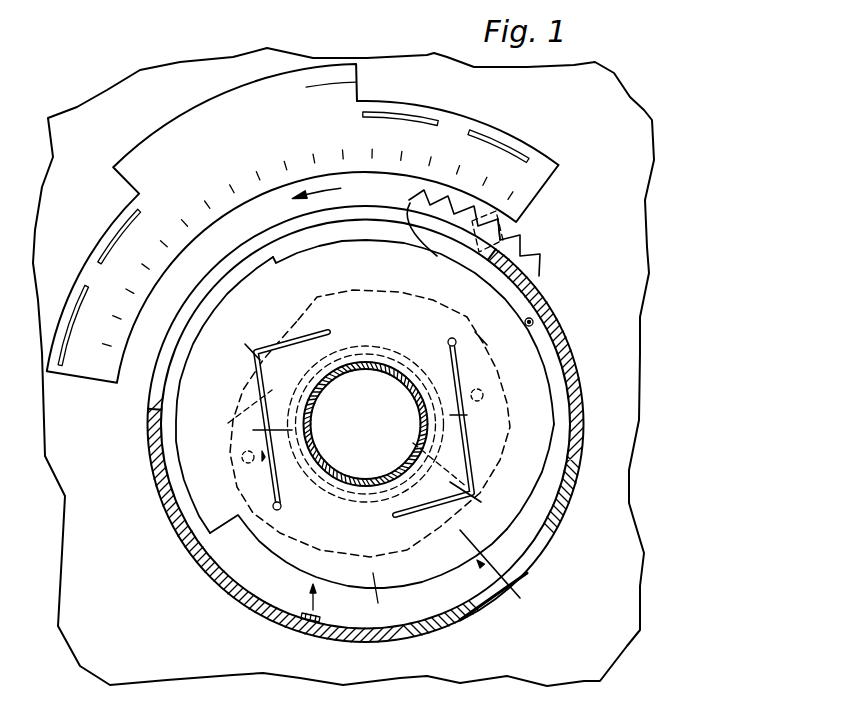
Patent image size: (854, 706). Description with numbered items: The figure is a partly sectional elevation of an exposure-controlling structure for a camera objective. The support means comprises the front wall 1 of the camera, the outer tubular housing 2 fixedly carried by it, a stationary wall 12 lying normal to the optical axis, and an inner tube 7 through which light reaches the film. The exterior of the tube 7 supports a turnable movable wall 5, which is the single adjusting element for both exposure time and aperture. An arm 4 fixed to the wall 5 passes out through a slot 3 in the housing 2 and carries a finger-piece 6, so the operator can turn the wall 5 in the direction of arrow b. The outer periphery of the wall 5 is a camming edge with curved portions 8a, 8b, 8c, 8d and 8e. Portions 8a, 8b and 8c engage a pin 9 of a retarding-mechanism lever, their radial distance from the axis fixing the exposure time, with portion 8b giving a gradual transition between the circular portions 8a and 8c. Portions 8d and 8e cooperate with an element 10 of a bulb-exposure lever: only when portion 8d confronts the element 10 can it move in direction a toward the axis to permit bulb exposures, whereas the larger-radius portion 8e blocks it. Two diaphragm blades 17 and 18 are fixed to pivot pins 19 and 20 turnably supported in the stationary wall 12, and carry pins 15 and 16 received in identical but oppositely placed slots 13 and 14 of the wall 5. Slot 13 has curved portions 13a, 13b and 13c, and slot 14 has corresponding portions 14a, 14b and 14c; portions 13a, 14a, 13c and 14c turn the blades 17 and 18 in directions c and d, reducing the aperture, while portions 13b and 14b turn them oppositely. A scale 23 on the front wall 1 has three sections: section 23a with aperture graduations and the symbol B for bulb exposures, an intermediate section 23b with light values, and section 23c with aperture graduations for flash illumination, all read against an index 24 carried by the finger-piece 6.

The front wall 1 is at (83, 482).
The outer housing 2 is at (188, 543).
The slot 3 is at (163, 368).
The arm 4 is at (460, 246).
The movable wall 5 is at (348, 263).
The finger-piece 6 is at (537, 273).
The inner tube 7 is at (410, 383).
The curved portion 8a is at (547, 378).
The curved portion 8b is at (527, 498).
The curved portion 8c is at (457, 567).
The curved portion 8d is at (282, 556).
The curved portion 8e is at (182, 480).
The pin 9 is at (535, 320).
The element 10 is at (302, 620).
The wall 12 is at (437, 603).
The slot 13 is at (467, 433).
The curved portion 13a is at (483, 342).
The curved portion 13b is at (470, 462).
The curved portion 13c is at (462, 567).
The slot 14 is at (257, 410).
The curved portion 14a is at (253, 482).
The curved portion 14b is at (253, 368).
The curved portion 14c is at (285, 342).
The pin 15 is at (453, 338).
The pin 16 is at (281, 508).
The diaphragm blade 17 is at (400, 288).
The diaphragm blade 18 is at (228, 423).
The pivot pin 19 is at (490, 398).
The pivot pin 20 is at (243, 457).
The scale 23 is at (176, 117).
The scale section 23a is at (485, 157).
The scale section 23b is at (357, 77).
The scale section 23c is at (120, 253).
The index 24 is at (497, 217).
The arrow a is at (322, 600).
The arrow b is at (325, 190).
The arrow c is at (484, 379).
The arrow d is at (234, 471).
The symbol B is at (452, 130).